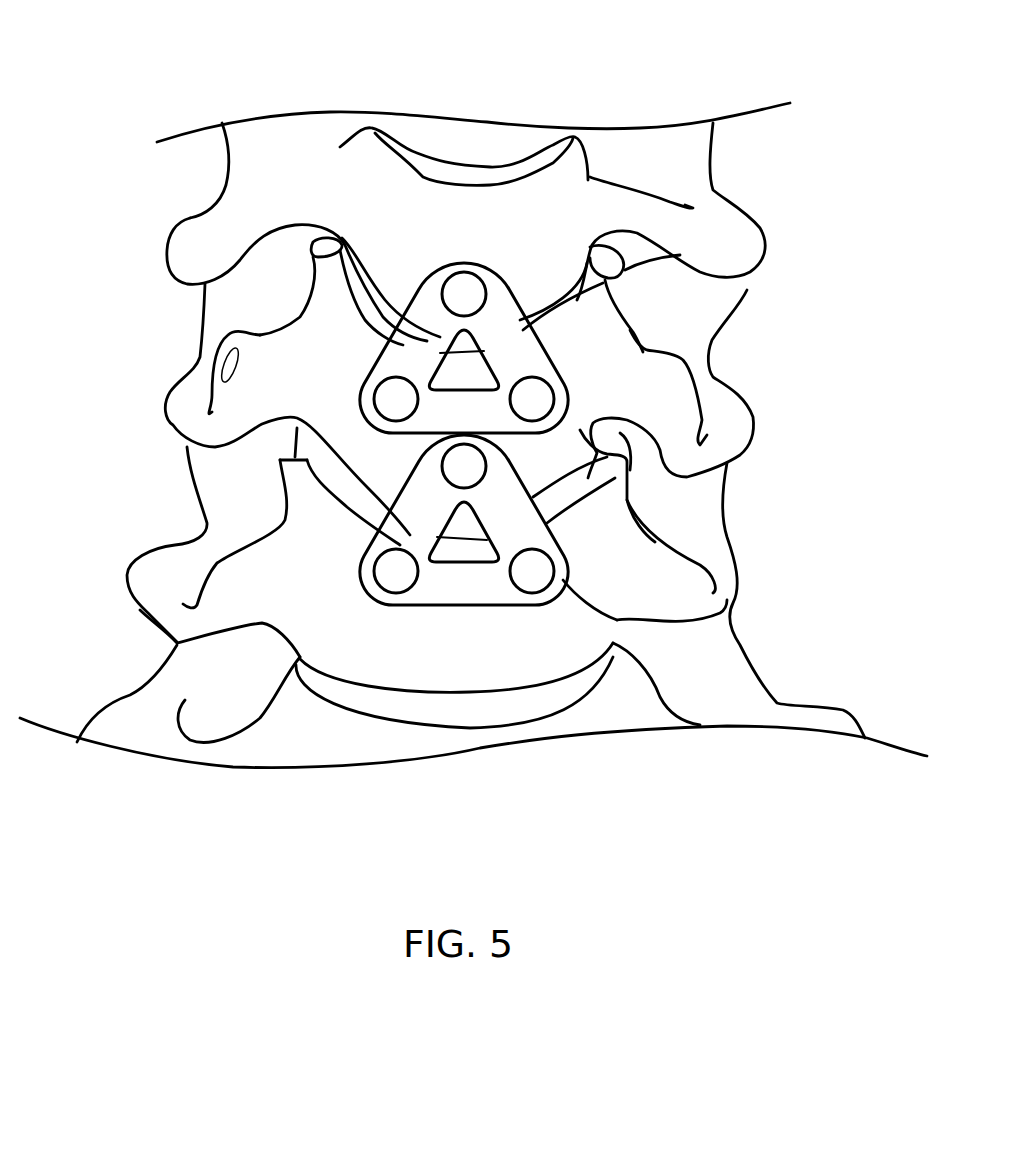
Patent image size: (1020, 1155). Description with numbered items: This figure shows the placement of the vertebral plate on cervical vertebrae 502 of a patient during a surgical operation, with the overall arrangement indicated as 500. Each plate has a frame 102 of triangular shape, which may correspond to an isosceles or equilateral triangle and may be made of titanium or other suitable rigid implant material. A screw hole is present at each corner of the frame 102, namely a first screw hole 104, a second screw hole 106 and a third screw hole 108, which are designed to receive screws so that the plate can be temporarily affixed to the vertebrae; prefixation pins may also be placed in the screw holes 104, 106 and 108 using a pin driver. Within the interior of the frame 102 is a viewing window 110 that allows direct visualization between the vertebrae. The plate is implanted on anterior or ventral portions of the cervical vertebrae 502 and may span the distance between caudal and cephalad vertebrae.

The spinal fixation system 500 is at (133, 50).
The cervical vertebrae 502 is at (205, 218).
The frame 102 is at (525, 328).
The first screw hole 104 is at (487, 292).
The second screw hole 106 is at (372, 391).
The third screw hole 108 is at (550, 390).
The viewing window 110 is at (457, 362).